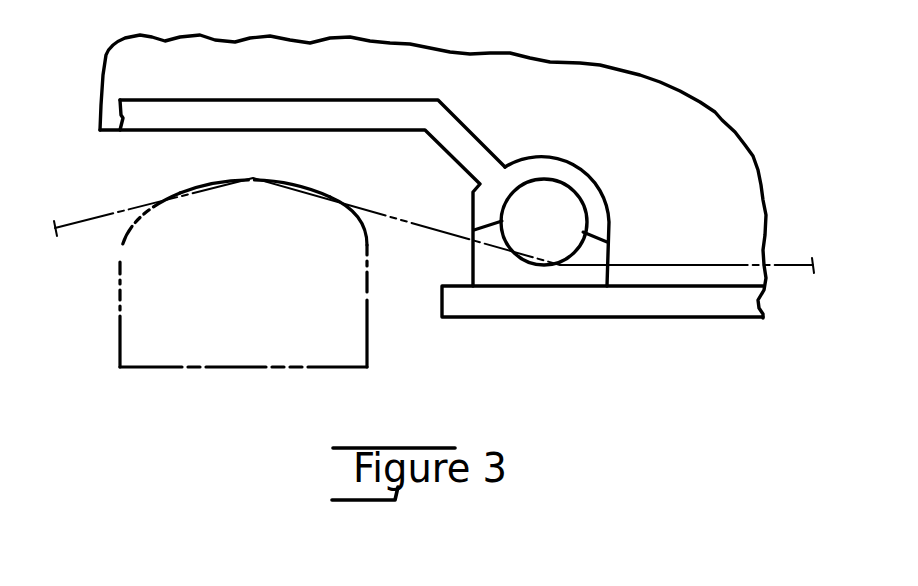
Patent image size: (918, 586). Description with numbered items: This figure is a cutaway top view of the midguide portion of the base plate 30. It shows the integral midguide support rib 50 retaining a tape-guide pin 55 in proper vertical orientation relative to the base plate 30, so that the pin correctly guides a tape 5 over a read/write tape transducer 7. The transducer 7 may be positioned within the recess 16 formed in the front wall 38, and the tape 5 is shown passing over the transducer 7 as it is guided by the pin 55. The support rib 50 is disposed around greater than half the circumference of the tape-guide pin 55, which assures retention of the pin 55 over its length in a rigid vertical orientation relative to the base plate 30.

The tape 5 is at (448, 237).
The read/write tape transducer 7 is at (126, 304).
The recess 16 is at (294, 171).
The base plate 30 is at (756, 180).
The front wall 38 is at (764, 320).
The midguide support rib 50 is at (481, 190).
The tape-guide pin 55 is at (573, 203).